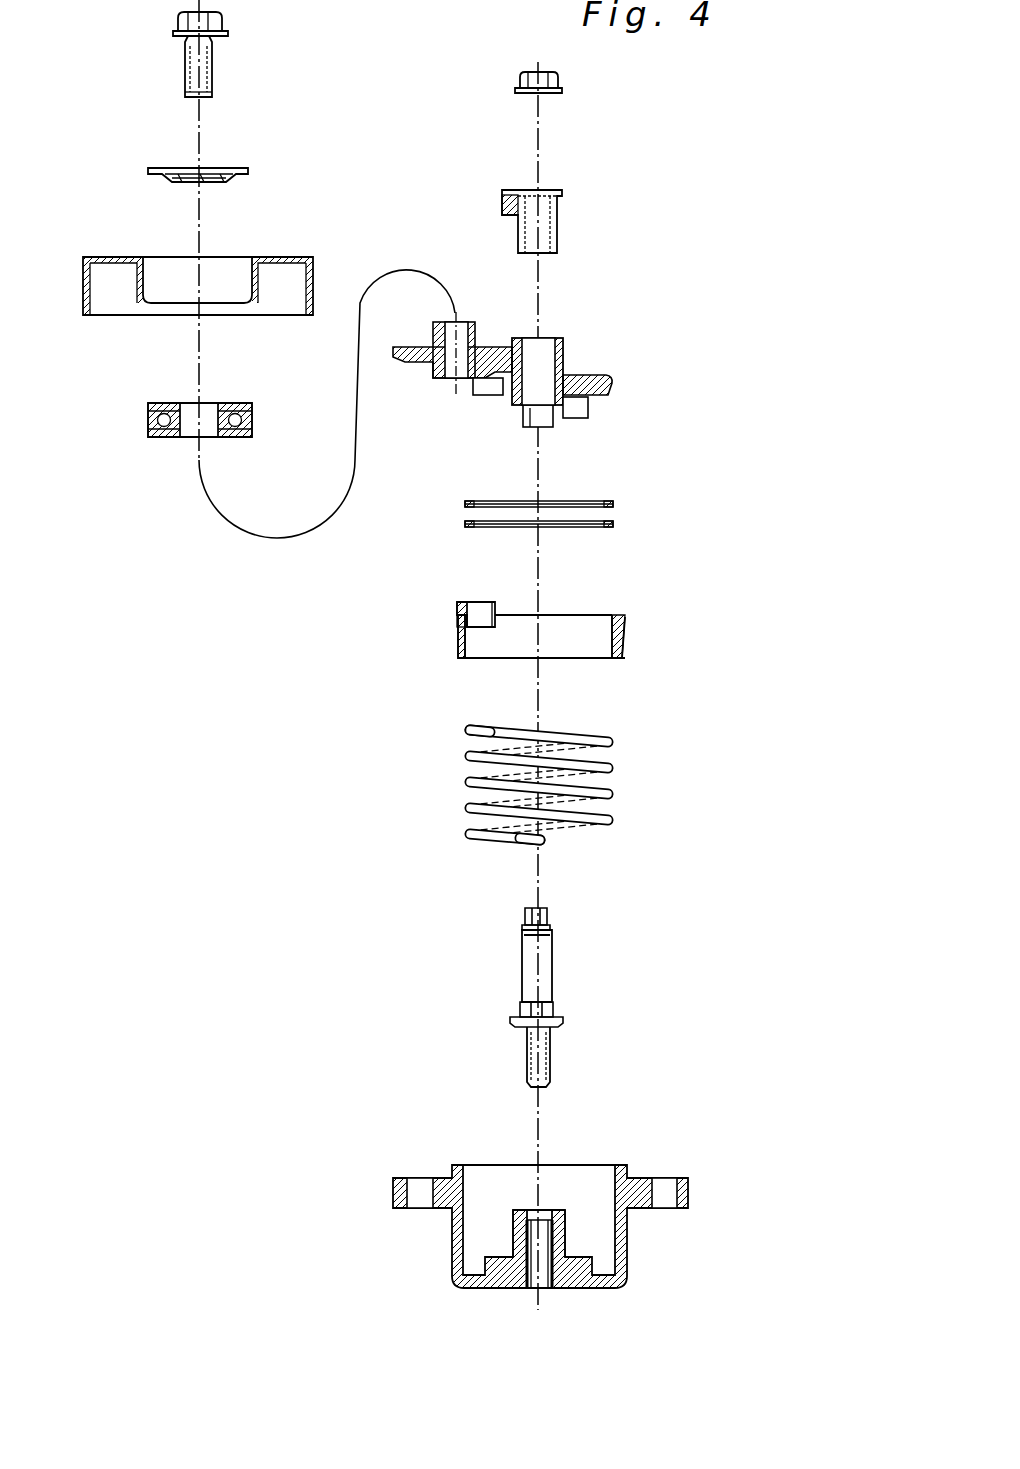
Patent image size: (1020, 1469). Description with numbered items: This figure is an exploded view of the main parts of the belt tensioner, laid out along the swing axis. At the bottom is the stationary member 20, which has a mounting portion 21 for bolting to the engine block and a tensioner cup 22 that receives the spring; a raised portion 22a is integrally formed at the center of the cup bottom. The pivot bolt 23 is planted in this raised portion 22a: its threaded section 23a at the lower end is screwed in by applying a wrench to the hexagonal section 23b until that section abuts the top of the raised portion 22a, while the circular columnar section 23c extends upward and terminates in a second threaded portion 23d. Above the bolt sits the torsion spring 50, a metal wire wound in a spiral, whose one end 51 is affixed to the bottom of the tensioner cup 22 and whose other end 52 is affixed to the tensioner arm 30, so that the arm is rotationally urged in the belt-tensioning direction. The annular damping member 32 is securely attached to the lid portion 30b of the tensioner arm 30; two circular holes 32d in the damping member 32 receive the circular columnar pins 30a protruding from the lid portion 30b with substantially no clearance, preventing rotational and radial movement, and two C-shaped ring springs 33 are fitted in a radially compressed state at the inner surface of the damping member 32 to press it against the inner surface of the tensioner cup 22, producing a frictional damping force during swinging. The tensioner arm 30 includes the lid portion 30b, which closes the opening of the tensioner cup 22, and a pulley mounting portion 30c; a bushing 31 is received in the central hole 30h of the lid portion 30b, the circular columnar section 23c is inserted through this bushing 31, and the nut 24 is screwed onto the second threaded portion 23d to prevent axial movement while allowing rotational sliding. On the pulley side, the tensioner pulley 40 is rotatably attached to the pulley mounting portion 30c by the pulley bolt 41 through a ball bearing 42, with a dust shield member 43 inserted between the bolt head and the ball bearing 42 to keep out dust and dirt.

The stationary member 20 is at (562, 1205).
The mounting portion 21 is at (682, 1210).
The tensioner cup 22 is at (627, 1272).
The raised portion 22a is at (560, 1227).
The pivot bolt 23 is at (542, 989).
The threaded section 23a is at (546, 1058).
The hexagonal section 23b is at (556, 1008).
The circular columnar section 23c is at (532, 978).
The second threaded portion 23d is at (523, 913).
The nut 24 is at (570, 82).
The tensioner arm 30 is at (625, 367).
The circular columnar pins 30a is at (480, 395).
The lid portion 30b is at (590, 378).
The pulley mounting portion 30c is at (428, 368).
The central hole 30h is at (560, 350).
The bushing 31 is at (566, 204).
The damping member 32 is at (448, 633).
The circular holes 32d is at (483, 607).
The C-shaped ring springs 33 is at (455, 505).
The tensioner pulley 40 is at (141, 255).
The pulley bolt 41 is at (166, 31).
The ball bearing 42 is at (140, 416).
The dust shield member 43 is at (157, 170).
The torsion spring 50 is at (455, 753).
The one end of torsion spring 51 is at (546, 839).
The other end of torsion spring 52 is at (500, 727).